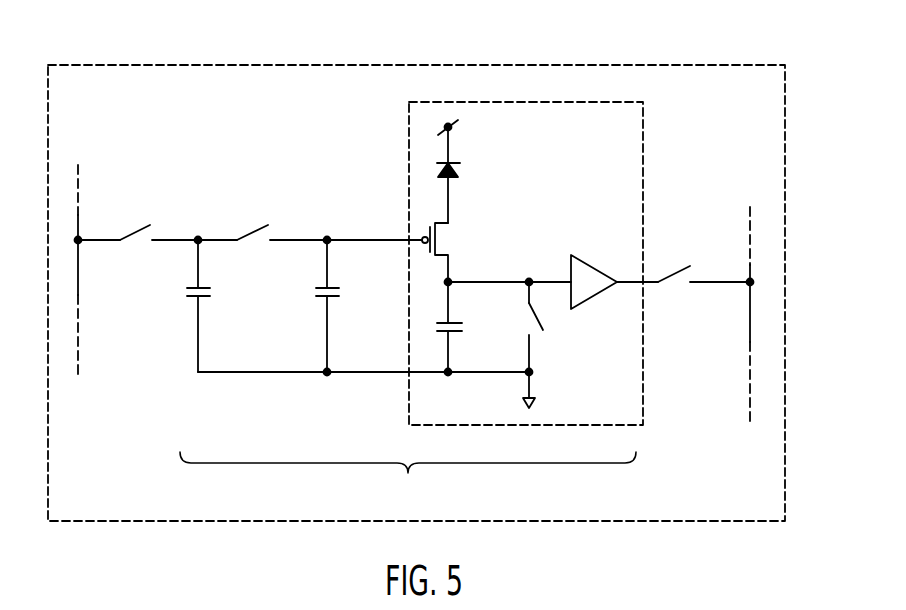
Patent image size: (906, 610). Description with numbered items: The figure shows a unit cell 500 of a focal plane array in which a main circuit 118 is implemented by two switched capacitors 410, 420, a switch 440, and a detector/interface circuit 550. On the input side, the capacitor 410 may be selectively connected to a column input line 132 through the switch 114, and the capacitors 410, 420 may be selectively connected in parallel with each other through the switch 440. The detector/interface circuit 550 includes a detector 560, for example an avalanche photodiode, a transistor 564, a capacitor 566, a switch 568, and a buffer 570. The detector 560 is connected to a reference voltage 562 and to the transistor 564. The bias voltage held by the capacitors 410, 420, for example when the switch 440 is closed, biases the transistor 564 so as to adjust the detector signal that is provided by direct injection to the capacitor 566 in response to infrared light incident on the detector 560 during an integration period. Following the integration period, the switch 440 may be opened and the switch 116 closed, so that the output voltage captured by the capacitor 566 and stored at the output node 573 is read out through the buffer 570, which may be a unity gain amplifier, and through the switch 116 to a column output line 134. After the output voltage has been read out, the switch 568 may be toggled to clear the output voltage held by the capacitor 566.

The unit cell 500 is at (720, 65).
The detector/interface circuit 550 is at (621, 411).
The column input line 132 is at (80, 357).
The switch 114 is at (131, 222).
The switch 440 is at (249, 222).
The switched capacitor 410 is at (213, 293).
The switched capacitor 420 is at (341, 293).
The reference voltage 562 is at (460, 125).
The detector 560 is at (462, 167).
The transistor 564 is at (449, 241).
The output node 573 is at (451, 278).
The capacitor 566 is at (464, 328).
The switch 568 is at (544, 329).
The buffer 570 is at (586, 262).
The switch 116 is at (670, 263).
The column output line 134 is at (749, 408).
The main circuit 118 is at (408, 477).